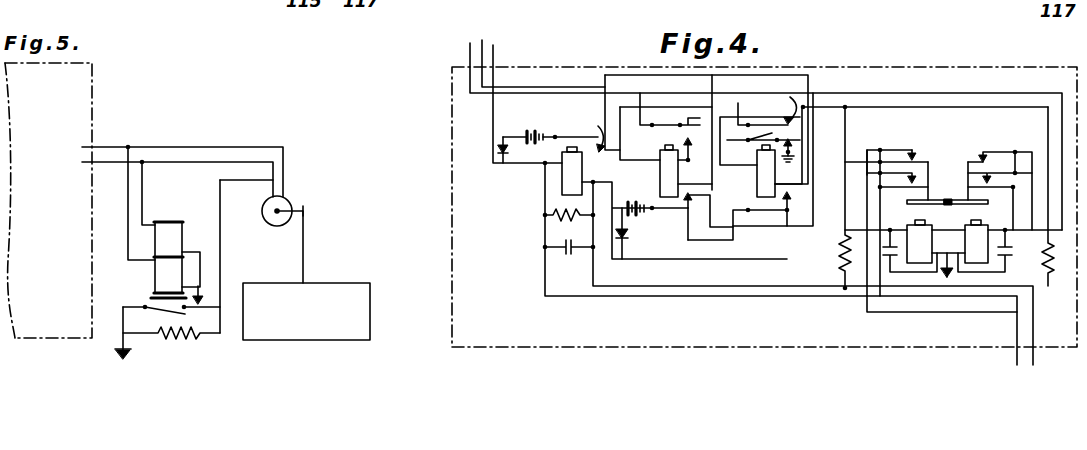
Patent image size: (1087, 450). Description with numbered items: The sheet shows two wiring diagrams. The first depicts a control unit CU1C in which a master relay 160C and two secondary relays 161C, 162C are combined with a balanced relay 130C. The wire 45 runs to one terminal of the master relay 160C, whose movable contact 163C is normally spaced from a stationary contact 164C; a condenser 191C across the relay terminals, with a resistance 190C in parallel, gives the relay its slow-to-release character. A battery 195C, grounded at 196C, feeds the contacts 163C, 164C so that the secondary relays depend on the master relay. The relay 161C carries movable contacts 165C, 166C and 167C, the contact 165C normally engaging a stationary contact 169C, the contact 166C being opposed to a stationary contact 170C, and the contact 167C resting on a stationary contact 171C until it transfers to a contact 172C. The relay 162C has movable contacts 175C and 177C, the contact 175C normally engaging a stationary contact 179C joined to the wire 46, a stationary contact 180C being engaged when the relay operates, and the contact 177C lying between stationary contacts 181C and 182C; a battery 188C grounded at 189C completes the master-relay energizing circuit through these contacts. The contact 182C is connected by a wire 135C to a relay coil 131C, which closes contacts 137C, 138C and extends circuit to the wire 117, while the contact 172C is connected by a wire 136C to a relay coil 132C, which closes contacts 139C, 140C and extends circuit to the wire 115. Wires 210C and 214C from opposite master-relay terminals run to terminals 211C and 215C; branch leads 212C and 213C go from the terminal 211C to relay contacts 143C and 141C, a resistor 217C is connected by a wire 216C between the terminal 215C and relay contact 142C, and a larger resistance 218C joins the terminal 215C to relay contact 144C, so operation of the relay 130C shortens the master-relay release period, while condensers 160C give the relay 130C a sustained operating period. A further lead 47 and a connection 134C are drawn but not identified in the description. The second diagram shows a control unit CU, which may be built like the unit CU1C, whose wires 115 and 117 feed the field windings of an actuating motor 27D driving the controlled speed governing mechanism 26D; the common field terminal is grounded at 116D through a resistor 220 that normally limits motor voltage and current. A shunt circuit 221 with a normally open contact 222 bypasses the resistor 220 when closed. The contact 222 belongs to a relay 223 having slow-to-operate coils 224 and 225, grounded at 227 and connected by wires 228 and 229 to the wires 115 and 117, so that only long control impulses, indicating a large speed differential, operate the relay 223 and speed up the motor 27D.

In FIG. 5, the control unit CU is at (93, 88).
In FIG. 5, the wire 117 is at (177, 147).
In FIG. 4, the wire 117 is at (1033, 355).
In FIG. 5, the wire 115 is at (208, 162).
In FIG. 4, the wire 115 is at (1014, 360).
In FIG. 5, the wire 229 is at (128, 183).
In FIG. 5, the wire 228 is at (128, 233).
In FIG. 5, the relay 223 is at (156, 219).
In FIG. 5, the actuating coil 225 is at (195, 211).
In FIG. 5, the actuating coil 224 is at (174, 272).
In FIG. 5, the ground 227 is at (201, 291).
In FIG. 5, the shunt circuit 221 is at (131, 305).
In FIG. 5, the normally open contact 222 is at (120, 326).
In FIG. 5, the ground 116D is at (126, 361).
In FIG. 5, the resistor 220 is at (200, 336).
In FIG. 5, the actuating motor 27D is at (291, 197).
In FIG. 5, the controlled speed governing mechanism 26D is at (312, 341).
In FIG. 4, the control unit CU1C is at (1015, 66).
In FIG. 4, the wire 46 is at (470, 52).
In FIG. 4, the conductor 47 is at (485, 42).
In FIG. 4, the wire 45 is at (494, 54).
In FIG. 4, the battery 195C is at (528, 130).
In FIG. 4, the ground 196C is at (507, 150).
In FIG. 4, the movable contact 163C is at (580, 135).
In FIG. 4, the stationary relay contact 164C is at (582, 132).
In FIG. 4, the master relay 160C is at (560, 175).
In FIG. 4, the resistance 190C is at (556, 216).
In FIG. 4, the condenser 191C is at (560, 249).
In FIG. 4, the wire 214C is at (684, 297).
In FIG. 4, the wire 210C is at (593, 290).
In FIG. 4, the battery 188C is at (684, 220).
In FIG. 4, the ground 189C is at (623, 236).
In FIG. 4, the contact 172C is at (686, 205).
In FIG. 4, the movable contact 167C is at (686, 215).
In FIG. 4, the stationary contact 171C is at (721, 198).
In FIG. 4, the movable contact 177C is at (748, 209).
In FIG. 4, the stationary relay contact 181C is at (778, 222).
In FIG. 4, the stationary relay contact 182C is at (810, 171).
In FIG. 4, the movable contact 165C is at (693, 93).
In FIG. 4, the movable contact 166C is at (645, 134).
In FIG. 4, the stationary contact 169C is at (676, 117).
In FIG. 4, the stationary contact 170C is at (703, 160).
In FIG. 4, the secondary relay 161C is at (660, 173).
In FIG. 4, the secondary relay 162C is at (757, 173).
In FIG. 4, the movable contact 175C is at (768, 120).
In FIG. 4, the stationary relay contact 179C is at (769, 102).
In FIG. 4, the stationary relay contact 180C is at (792, 150).
In FIG. 4, the wire 136C is at (862, 95).
In FIG. 4, the terminal 215C is at (845, 300).
In FIG. 4, the wire 135C is at (840, 252).
In FIG. 4, the resistance 218C is at (840, 270).
In FIG. 4, the branch lead 212C is at (866, 300).
In FIG. 4, the terminal 211C is at (883, 300).
In FIG. 4, the branch lead 213C is at (920, 296).
In FIG. 4, the rectifier 134C is at (949, 280).
In FIG. 4, the resistor 217C is at (1050, 268).
In FIG. 4, the wire 216C is at (1046, 290).
In FIG. 4, the relay contact 140C is at (910, 148).
In FIG. 4, the relay contact 139C is at (886, 147).
In FIG. 4, the relay contact 143C is at (878, 186).
In FIG. 4, the relay contact 144C is at (912, 172).
In FIG. 4, the balanced relay 130C is at (957, 150).
In FIG. 4, the relay contact 137C is at (956, 162).
In FIG. 4, the relay contact 142C is at (981, 176).
In FIG. 4, the relay contact 141C is at (972, 204).
In FIG. 4, the relay contact 138C is at (1000, 150).
In FIG. 4, the relay coil 131C is at (918, 232).
In FIG. 4, the relay coil 132C is at (1003, 210).